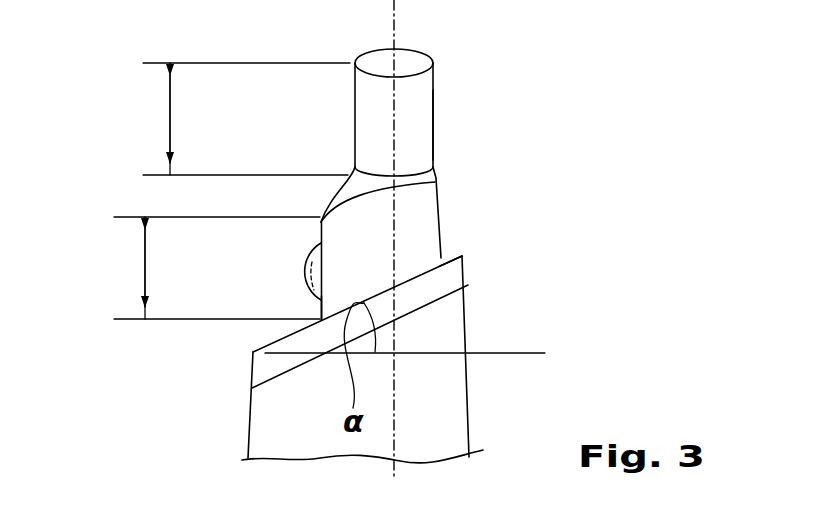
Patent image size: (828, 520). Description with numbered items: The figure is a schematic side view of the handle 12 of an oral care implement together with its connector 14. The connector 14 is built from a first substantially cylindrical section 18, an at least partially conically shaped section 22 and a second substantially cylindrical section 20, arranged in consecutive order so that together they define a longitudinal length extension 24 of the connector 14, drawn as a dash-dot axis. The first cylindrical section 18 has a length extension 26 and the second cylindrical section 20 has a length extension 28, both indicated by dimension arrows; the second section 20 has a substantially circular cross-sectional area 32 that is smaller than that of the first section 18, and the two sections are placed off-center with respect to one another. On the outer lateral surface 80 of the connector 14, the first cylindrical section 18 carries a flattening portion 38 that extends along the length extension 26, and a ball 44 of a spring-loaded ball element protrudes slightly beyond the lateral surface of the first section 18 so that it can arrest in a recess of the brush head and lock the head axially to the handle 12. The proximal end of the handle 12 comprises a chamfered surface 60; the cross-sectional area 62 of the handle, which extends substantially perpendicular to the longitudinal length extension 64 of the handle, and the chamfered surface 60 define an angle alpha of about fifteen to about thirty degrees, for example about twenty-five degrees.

The handle 12 is at (452, 313).
The connector 14 is at (443, 193).
The first substantially cylindrical section 18 is at (427, 222).
The second substantially cylindrical section 20 is at (418, 97).
The at least partially conically shaped section 22 is at (350, 193).
The longitudinal length extension 24 is at (395, 22).
The length extension of first cylindrical section 26 is at (144, 275).
The length extension of second cylindrical section 28 is at (170, 120).
The cross-sectional area of second cylindrical section 32 is at (341, 38).
The flattening portion 38 is at (317, 298).
The ball 44 is at (313, 262).
The chamfered surface 60 is at (455, 254).
The cross-sectional area of handle 62 is at (256, 378).
The longitudinal length extension of handle 64 is at (384, 41).
The outer lateral surface 80 is at (436, 132).